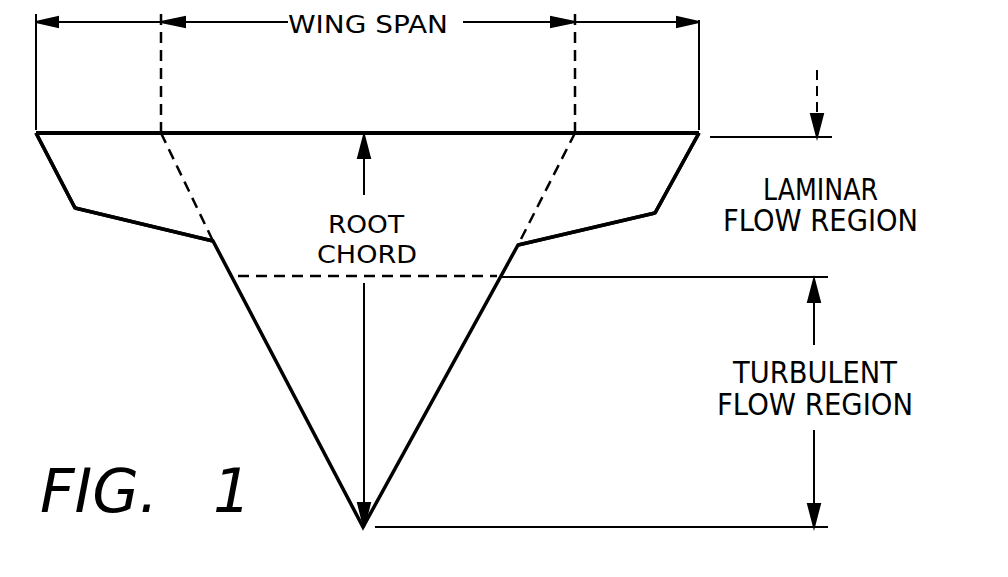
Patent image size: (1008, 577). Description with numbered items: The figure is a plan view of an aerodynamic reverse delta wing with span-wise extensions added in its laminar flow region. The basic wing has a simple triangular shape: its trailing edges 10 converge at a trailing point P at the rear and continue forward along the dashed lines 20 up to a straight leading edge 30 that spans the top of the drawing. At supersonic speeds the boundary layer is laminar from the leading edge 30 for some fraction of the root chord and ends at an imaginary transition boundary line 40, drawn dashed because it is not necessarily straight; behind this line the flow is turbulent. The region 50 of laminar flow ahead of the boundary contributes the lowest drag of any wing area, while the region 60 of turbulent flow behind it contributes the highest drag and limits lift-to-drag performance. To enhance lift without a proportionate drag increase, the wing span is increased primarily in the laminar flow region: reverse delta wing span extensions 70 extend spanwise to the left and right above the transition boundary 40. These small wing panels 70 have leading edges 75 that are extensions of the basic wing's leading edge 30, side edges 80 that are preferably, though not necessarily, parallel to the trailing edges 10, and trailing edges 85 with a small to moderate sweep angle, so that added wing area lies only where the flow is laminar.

The trailing edges 10 is at (300, 409).
The dashed lines 20 is at (176, 160).
The leading edge 30 is at (283, 133).
The imaginary transition boundary line 40 is at (487, 285).
The region of laminar flow 50 is at (491, 192).
The region of turbulent flow 60 is at (436, 334).
The reverse delta wing span extensions 70 is at (133, 195).
The leading edges of span extensions 75 is at (88, 133).
The side edges of span extensions 80 is at (57, 178).
The trailing edges of span extensions 85 is at (143, 225).
The trailing point P is at (362, 527).